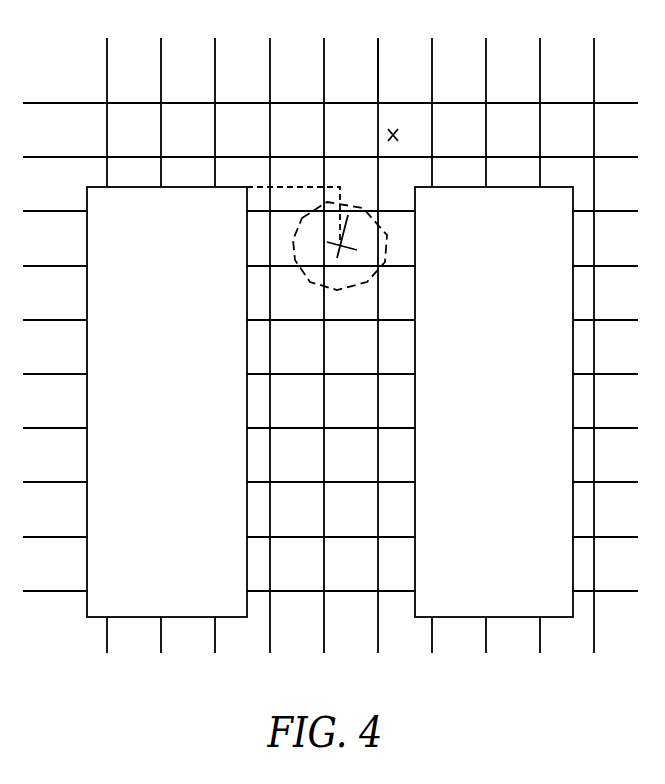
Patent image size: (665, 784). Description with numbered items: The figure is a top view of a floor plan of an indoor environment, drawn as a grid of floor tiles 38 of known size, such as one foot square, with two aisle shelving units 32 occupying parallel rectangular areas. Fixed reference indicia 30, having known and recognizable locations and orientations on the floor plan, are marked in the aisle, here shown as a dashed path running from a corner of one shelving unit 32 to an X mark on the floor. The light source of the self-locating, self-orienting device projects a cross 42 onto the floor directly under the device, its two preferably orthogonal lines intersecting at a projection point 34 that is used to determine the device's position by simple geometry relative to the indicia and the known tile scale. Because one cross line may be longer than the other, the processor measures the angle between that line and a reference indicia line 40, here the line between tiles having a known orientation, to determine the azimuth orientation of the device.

The fixed reference indicia 30 is at (247, 181).
The shelving unit 32 is at (154, 578).
The projection point 34 is at (350, 238).
The floor tile 38 is at (449, 141).
The reference indicia line 40 is at (381, 61).
The cross 42 is at (344, 259).